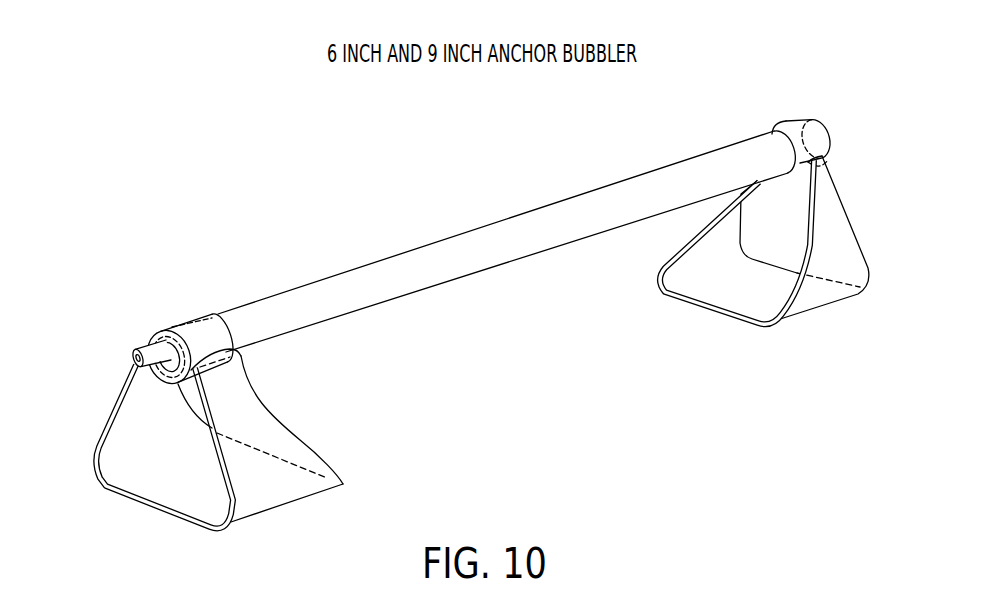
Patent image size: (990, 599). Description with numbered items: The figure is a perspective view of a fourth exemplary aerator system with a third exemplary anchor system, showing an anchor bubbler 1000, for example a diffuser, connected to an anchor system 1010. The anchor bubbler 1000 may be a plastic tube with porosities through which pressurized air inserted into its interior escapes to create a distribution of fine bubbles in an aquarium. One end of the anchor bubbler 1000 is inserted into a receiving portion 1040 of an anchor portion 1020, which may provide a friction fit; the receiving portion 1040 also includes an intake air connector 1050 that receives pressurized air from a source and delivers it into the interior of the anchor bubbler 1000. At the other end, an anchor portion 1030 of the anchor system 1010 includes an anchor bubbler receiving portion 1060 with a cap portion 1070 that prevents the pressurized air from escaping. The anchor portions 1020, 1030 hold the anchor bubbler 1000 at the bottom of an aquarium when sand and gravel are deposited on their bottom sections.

The anchor bubbler 1000 is at (413, 223).
The anchor system 1010 is at (380, 477).
The anchor portion 1020 is at (112, 507).
The anchor portion 1030 is at (888, 230).
The receiving portion 1040 is at (178, 320).
The intake air connector 1050 is at (133, 358).
The anchor bubbler receiving portion 1060 is at (790, 128).
The cap portion 1070 is at (827, 132).